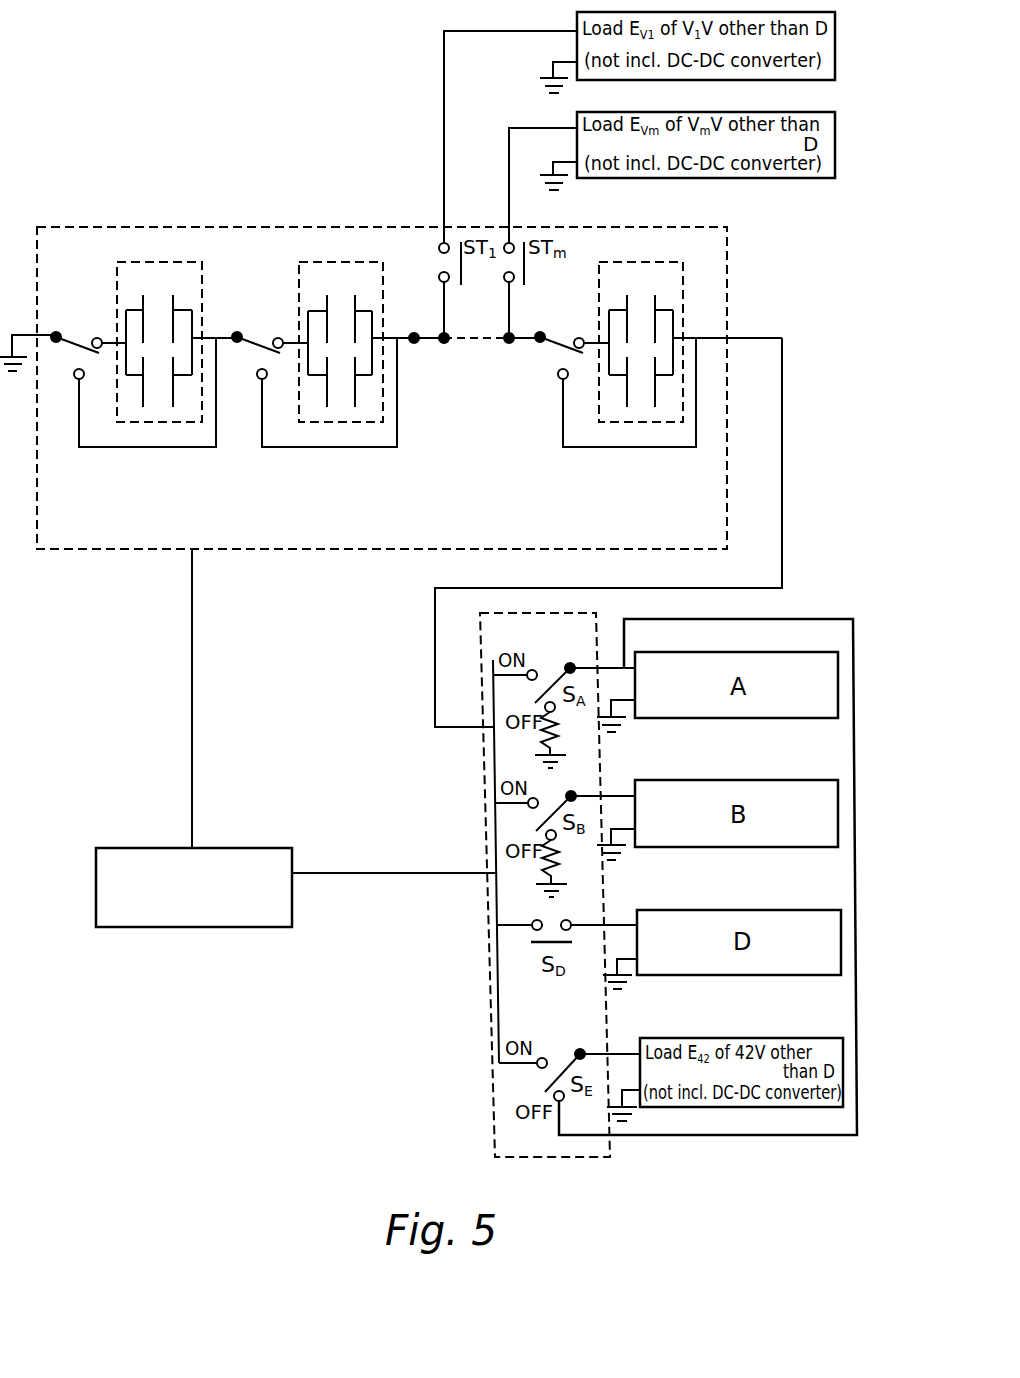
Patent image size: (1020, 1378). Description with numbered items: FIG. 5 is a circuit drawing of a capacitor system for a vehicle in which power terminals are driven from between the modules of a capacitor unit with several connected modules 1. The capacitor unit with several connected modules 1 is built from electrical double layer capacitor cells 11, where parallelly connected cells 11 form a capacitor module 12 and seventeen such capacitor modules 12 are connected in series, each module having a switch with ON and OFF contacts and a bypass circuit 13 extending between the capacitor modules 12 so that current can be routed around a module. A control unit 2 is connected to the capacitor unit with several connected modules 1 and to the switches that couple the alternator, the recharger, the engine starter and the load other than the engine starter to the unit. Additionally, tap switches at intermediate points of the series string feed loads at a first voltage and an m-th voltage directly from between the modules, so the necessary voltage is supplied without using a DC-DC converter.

The capacitor unit with several connected modules 1 is at (243, 550).
The control unit 2 is at (296, 738).
The cell 11 is at (143, 306).
The capacitor module 12 is at (200, 262).
The bypass circuit 13 is at (165, 447).